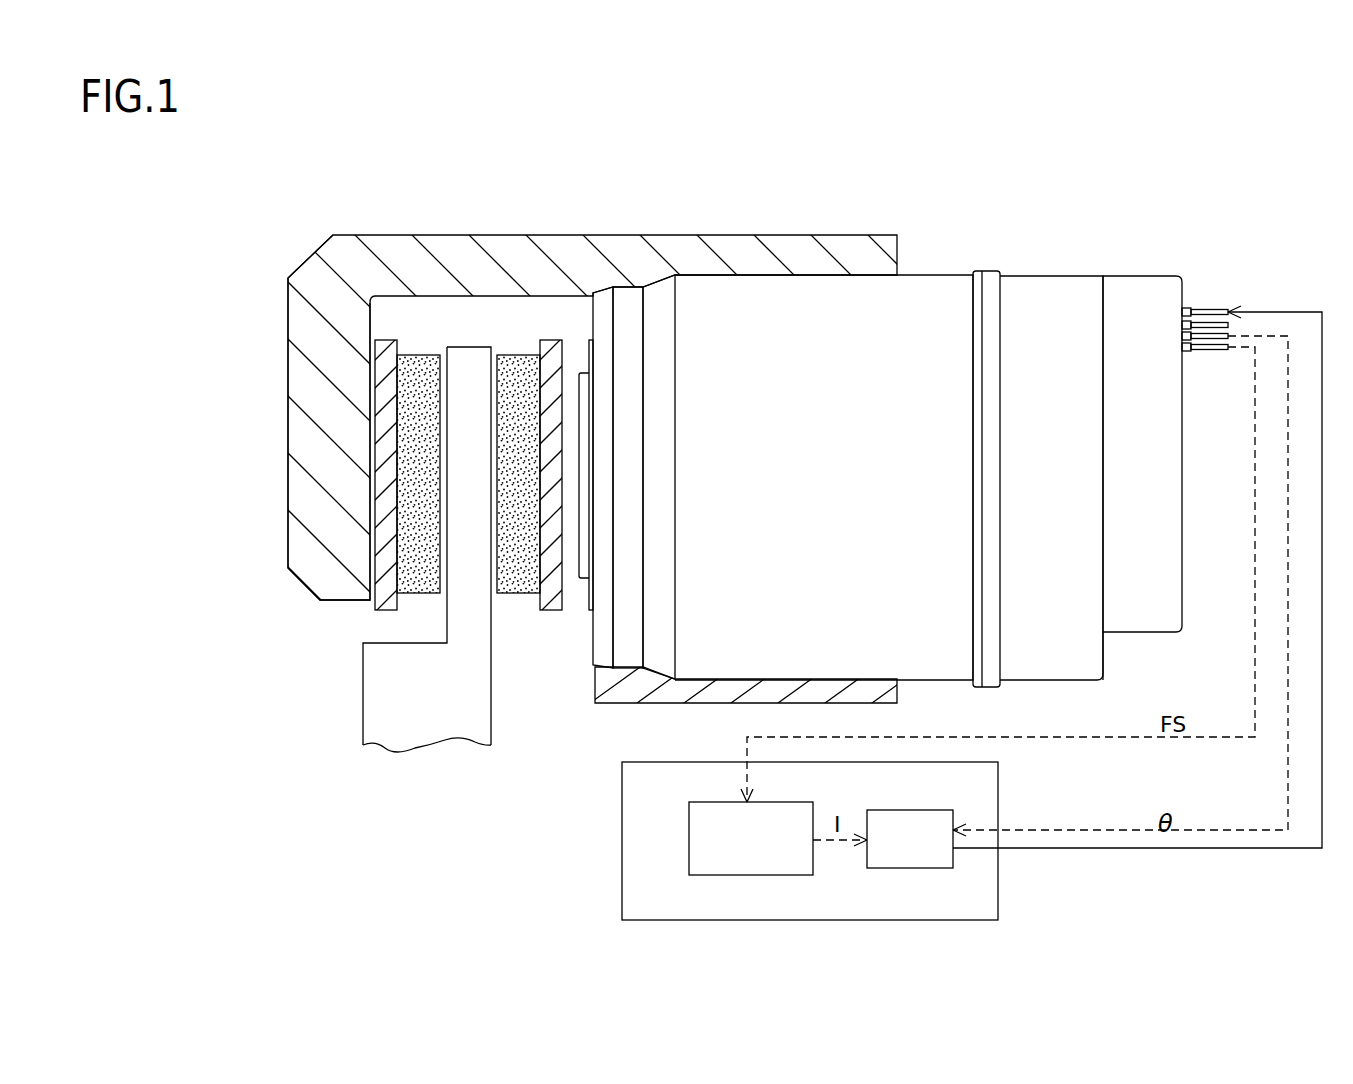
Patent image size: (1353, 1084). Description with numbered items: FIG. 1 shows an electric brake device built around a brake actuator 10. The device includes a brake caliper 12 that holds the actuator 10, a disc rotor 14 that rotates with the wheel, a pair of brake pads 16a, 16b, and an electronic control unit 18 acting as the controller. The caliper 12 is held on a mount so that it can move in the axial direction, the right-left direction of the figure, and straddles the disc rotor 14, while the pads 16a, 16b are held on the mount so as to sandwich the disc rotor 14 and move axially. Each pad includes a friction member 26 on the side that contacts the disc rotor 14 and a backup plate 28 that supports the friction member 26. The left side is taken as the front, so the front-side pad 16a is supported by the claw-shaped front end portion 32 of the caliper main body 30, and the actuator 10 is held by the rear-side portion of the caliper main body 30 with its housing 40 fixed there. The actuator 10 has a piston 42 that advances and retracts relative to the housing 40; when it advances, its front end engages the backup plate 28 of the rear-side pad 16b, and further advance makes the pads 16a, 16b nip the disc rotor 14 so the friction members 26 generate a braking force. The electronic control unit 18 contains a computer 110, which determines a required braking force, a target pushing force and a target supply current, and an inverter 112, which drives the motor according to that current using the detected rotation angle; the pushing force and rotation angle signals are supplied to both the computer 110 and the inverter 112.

The brake actuator 10 is at (995, 226).
The brake caliper 12 is at (610, 143).
The disc rotor 14 is at (372, 682).
The front-side brake pad 16a is at (412, 318).
The rear-side brake pad 16b is at (528, 318).
The electronic control unit 18 is at (648, 762).
The friction member 26 is at (423, 358).
The backup plate 28 is at (378, 338).
The caliper main body 30 is at (636, 238).
The front end portion (claw portion) 32 is at (305, 503).
The housing 40 is at (924, 296).
The piston 42 is at (587, 582).
The computer 110 is at (717, 876).
The inverter 112 is at (928, 870).